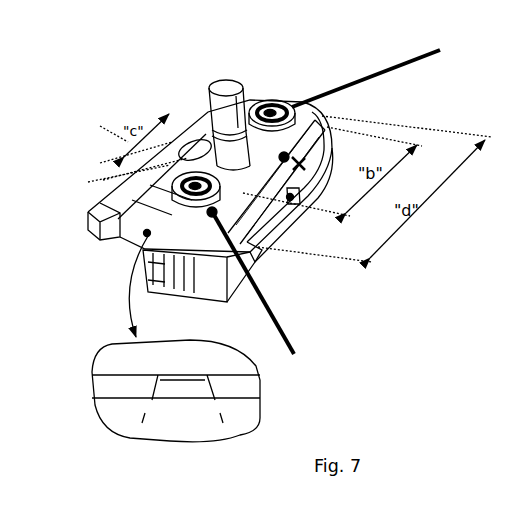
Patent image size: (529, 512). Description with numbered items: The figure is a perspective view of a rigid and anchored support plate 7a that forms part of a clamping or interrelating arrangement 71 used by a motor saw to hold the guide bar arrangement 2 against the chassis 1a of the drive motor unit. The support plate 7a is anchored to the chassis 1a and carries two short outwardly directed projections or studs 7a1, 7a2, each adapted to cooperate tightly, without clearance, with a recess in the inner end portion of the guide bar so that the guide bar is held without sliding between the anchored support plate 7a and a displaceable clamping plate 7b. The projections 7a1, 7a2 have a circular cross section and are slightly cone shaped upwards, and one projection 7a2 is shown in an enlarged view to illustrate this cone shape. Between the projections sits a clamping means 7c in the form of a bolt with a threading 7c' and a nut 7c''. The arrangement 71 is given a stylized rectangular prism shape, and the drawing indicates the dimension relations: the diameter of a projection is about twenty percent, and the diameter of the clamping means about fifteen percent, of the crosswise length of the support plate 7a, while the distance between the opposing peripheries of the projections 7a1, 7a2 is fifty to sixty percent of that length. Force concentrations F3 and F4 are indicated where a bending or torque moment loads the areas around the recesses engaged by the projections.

The clamping means 7c is at (157, 154).
The nut 7c'' is at (211, 106).
The threading 7c' is at (251, 85).
The support plate 7a is at (305, 103).
The projection 7a1 is at (290, 106).
The projection 7a2 is at (221, 170).
The guide bar arrangement 2 is at (330, 160).
The clamping or interrelating arrangement 71 is at (252, 246).
The chassis 1a is at (97, 131).
The clamping plate 7b is at (165, 158).
The force concentration F3 is at (382, 76).
The force concentration F4 is at (265, 289).